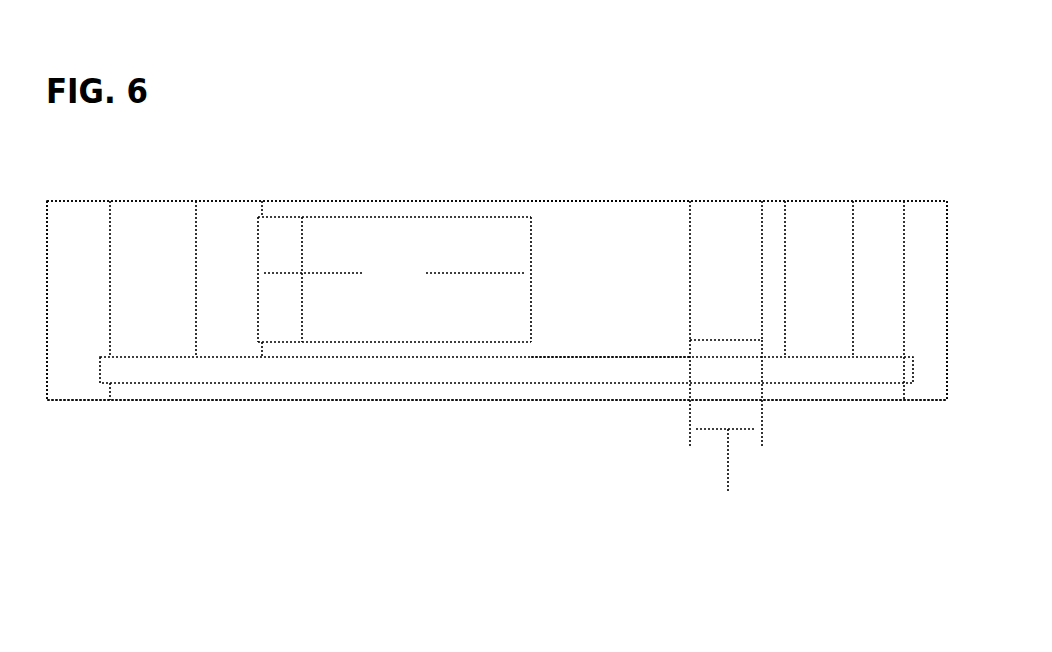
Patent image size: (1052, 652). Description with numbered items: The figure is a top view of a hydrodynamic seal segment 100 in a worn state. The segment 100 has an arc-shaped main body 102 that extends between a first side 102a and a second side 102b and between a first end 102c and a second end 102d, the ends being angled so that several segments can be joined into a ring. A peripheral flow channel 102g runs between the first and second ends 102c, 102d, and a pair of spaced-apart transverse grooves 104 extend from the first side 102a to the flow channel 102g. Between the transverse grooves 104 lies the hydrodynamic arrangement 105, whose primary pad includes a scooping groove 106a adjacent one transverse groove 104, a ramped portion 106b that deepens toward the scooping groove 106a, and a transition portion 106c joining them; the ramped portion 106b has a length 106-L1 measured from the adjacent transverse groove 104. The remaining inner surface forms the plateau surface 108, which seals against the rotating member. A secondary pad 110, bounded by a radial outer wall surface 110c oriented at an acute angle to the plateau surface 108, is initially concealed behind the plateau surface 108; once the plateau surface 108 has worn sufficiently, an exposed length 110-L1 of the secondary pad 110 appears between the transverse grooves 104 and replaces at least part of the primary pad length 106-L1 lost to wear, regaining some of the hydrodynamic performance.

The segment 100 is at (148, 485).
The main body 102 is at (120, 213).
The first side 102a is at (587, 201).
The second side 102b is at (877, 402).
The first end 102c is at (72, 230).
The second end 102d is at (920, 222).
The flow channel 102g is at (152, 372).
The transverse grooves 104 is at (221, 300).
The hydrodynamic arrangement 105 is at (392, 432).
The scooping groove 106a is at (288, 315).
The ramped portion 106b is at (515, 305).
The transition portion 106c is at (302, 318).
The initial length of ramped portion 106-L1 is at (394, 273).
The plateau surface 108 is at (603, 318).
The secondary pad 110 is at (701, 232).
The radial outer wall surface 110c is at (753, 243).
The exposed length of secondary pad 110-L1 is at (726, 426).